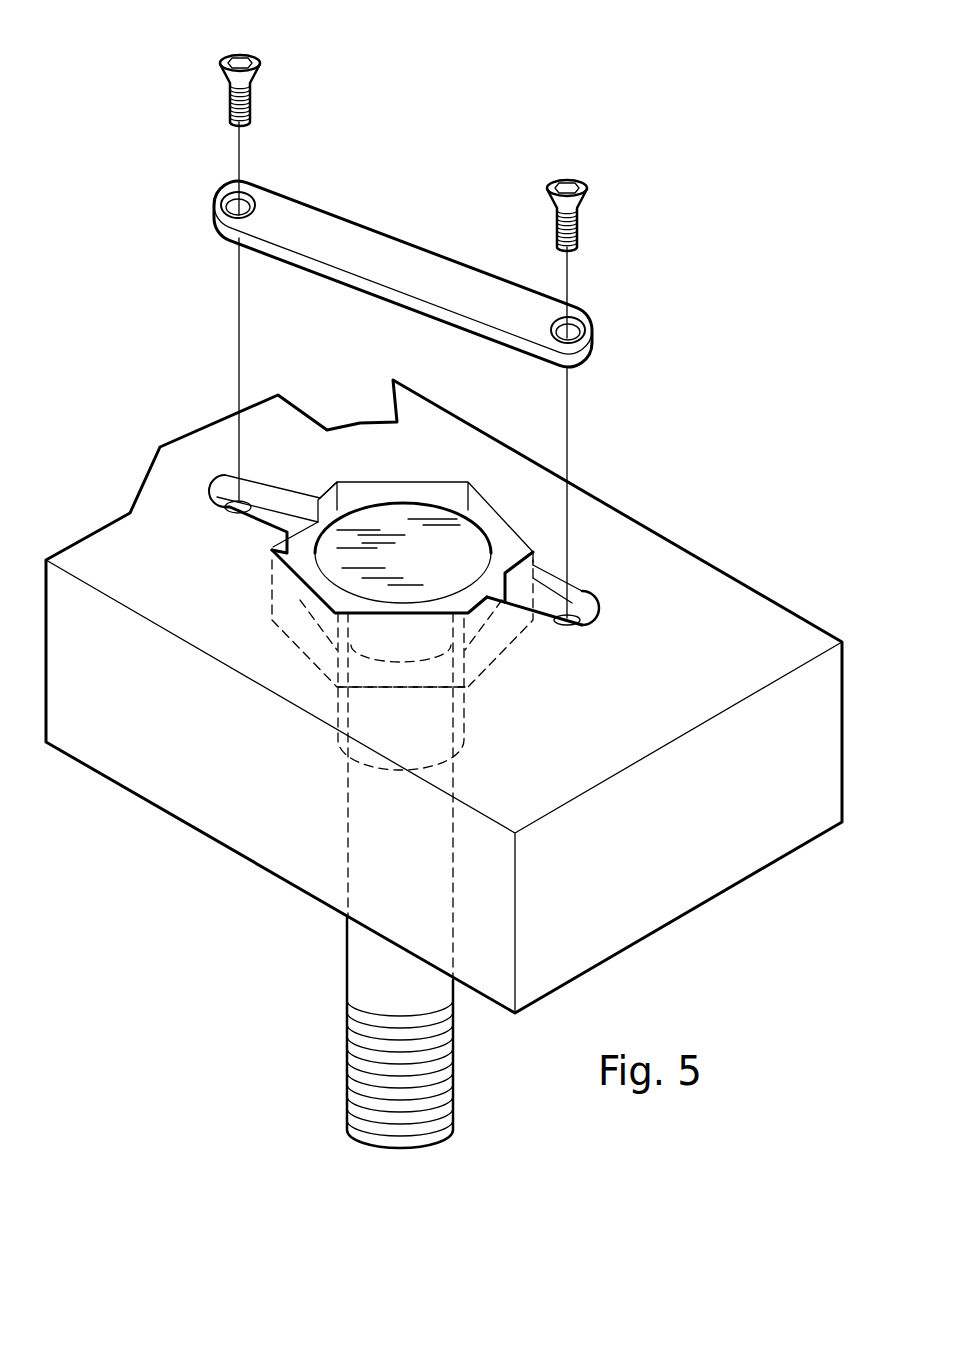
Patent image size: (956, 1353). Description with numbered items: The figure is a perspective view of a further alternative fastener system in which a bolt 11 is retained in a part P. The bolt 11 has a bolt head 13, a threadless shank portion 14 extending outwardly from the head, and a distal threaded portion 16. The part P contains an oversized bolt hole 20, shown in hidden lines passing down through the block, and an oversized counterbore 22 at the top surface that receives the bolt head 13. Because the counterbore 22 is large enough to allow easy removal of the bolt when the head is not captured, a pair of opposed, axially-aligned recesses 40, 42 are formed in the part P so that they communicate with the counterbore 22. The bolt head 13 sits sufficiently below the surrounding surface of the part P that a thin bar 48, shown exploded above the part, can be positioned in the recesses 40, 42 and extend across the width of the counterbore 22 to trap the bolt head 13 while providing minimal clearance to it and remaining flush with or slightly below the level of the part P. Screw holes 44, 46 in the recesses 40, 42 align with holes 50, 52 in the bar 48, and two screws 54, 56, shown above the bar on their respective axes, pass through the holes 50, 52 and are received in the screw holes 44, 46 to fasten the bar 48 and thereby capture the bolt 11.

The bolt 11 is at (462, 756).
The bolt head 13 is at (350, 568).
The threadless shank portion 14 is at (367, 852).
The distal threaded portion 16 is at (358, 1028).
The bolt hole 20 is at (460, 697).
The counterbore 22 is at (418, 490).
The recess 40 is at (557, 590).
The recess 42 is at (277, 493).
The screw hole 44 is at (570, 620).
The screw hole 46 is at (233, 481).
The bar 48 is at (355, 248).
The hole 50 is at (222, 202).
The hole 52 is at (587, 318).
The screw 54 is at (218, 66).
The screw 56 is at (592, 192).
The part P is at (742, 617).